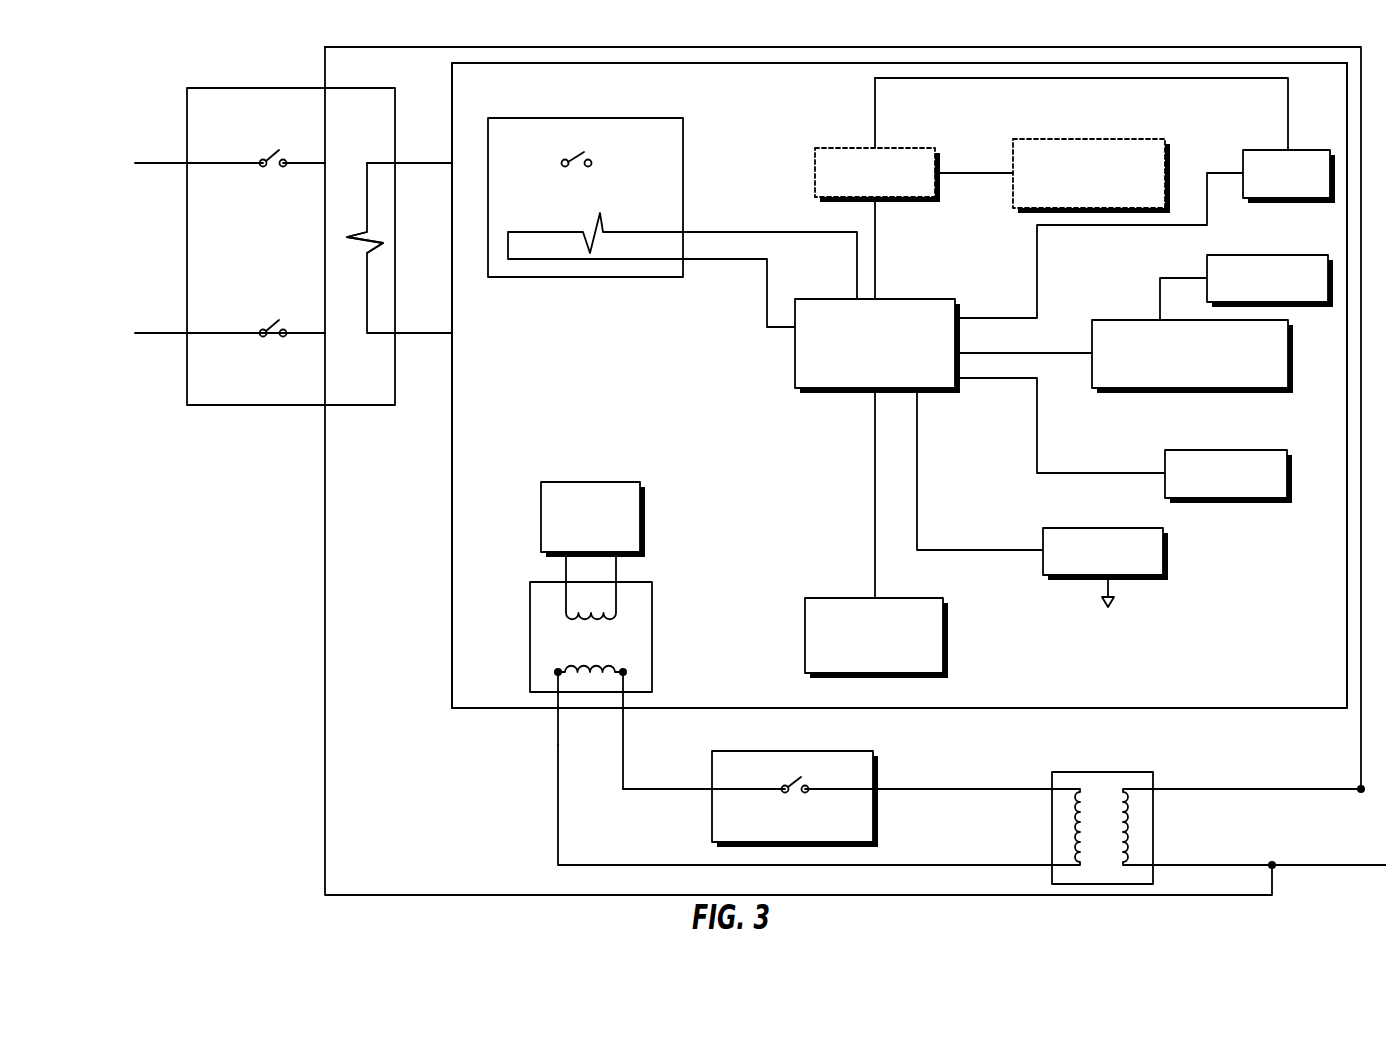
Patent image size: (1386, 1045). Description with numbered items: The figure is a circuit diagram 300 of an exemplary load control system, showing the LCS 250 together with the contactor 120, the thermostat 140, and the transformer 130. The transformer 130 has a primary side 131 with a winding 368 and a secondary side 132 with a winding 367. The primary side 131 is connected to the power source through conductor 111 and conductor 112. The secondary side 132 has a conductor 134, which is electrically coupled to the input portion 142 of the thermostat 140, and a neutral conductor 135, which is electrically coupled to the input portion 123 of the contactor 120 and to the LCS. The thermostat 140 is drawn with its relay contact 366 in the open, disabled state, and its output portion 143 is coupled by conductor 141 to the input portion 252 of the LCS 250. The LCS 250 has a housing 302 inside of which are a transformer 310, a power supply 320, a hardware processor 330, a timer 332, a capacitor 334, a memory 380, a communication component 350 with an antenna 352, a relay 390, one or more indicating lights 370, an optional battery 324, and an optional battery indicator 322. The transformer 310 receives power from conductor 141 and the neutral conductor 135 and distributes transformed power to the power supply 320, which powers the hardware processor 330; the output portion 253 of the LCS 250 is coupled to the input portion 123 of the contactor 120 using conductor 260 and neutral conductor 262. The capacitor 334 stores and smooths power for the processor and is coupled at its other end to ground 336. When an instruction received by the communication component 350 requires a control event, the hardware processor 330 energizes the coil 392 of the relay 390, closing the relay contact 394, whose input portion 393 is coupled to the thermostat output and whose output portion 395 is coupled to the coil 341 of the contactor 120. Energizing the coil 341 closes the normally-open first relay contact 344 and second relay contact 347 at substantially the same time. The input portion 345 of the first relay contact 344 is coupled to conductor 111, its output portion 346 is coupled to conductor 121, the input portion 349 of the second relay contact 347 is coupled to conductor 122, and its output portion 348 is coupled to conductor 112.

The circuit diagram 300 is at (779, 471).
The conductor 111 is at (375, 48).
The conductor 112 is at (326, 680).
The contactor 120 is at (270, 88).
The conductor 121 is at (177, 162).
The conductor 122 is at (175, 335).
The input portion of the contactor 123 is at (403, 163).
The first relay contact 344 is at (273, 162).
The input portion of the first relay contact 345 is at (300, 133).
The output portion of the first relay contact 346 is at (262, 160).
The second relay contact 347 is at (260, 334).
The output portion of the second relay contact 348 is at (285, 338).
The input portion of the second relay contact 349 is at (262, 338).
The coil 341 is at (360, 245).
The output portion of the LCS 253 is at (399, 275).
The conductor 260 is at (442, 172).
The neutral conductor 262 is at (499, 400).
The LCS 250 is at (1268, 712).
The housing 302 is at (1285, 685).
The relay 390 is at (672, 207).
The coil 392 is at (603, 226).
The input portion of the relay contact 393 is at (590, 160).
The relay contact 394 is at (578, 172).
The output portion of the relay contact 395 is at (563, 160).
The hardware processor 330 is at (840, 298).
The battery 324 is at (830, 147).
The battery indicator 322 is at (1033, 139).
The timer 332 is at (1262, 150).
The antenna 352 is at (1275, 255).
The communication component 350 is at (1112, 320).
The memory 380 is at (1187, 450).
The capacitor 334 is at (1065, 528).
The ground 336 is at (1112, 605).
The indicating lights 370 is at (825, 598).
The power supply 320 is at (572, 482).
The transformer 310 is at (653, 638).
The input portion of the LCS 252 is at (552, 722).
The conductor 135 is at (556, 795).
The output portion of the thermostat 143 is at (705, 788).
The conductor 141 is at (672, 790).
The thermostat 140 is at (795, 782).
The relay contact 366 is at (802, 797).
The conductor 134 is at (900, 790).
The input portion of the thermostat 142 is at (884, 793).
The transformer 130 is at (1107, 826).
The winding 367 is at (1075, 840).
The winding 368 is at (1130, 840).
The secondary side 132 is at (1040, 788).
The primary side 131 is at (1172, 788).